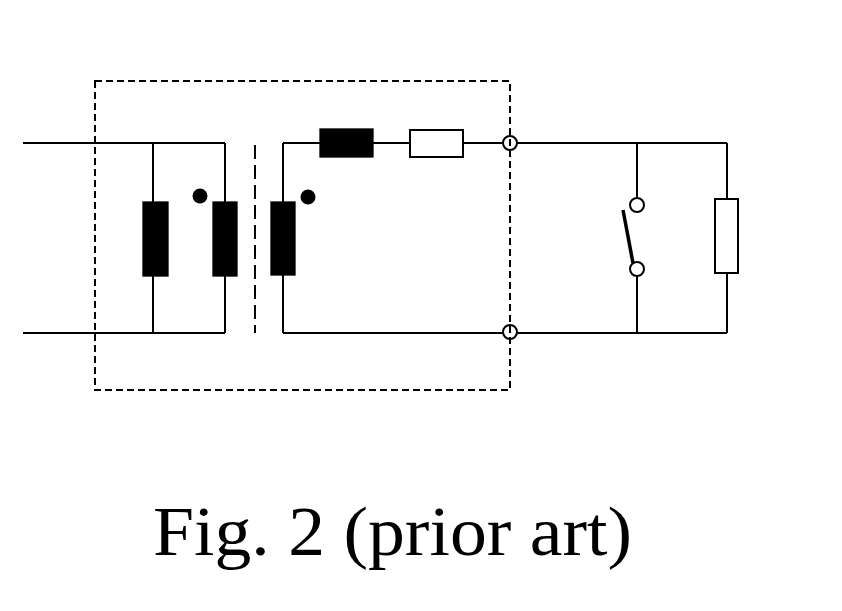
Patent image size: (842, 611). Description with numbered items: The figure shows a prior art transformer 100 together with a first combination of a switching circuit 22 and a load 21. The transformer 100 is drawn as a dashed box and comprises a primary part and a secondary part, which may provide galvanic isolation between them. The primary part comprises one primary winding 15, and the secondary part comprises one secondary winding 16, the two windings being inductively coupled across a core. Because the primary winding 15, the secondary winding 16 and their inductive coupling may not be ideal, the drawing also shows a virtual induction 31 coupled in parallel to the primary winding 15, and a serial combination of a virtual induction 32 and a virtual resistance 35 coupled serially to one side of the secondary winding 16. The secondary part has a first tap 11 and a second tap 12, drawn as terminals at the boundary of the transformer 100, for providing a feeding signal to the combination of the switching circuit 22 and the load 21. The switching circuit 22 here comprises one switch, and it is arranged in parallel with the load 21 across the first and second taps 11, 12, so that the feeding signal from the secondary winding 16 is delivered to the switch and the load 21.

The transformer 100 is at (469, 390).
The virtual induction 31 is at (139, 239).
The primary winding 15 is at (214, 252).
The secondary winding 16 is at (299, 235).
The virtual induction 32 is at (346, 126).
The virtual resistance 35 is at (436, 126).
The second tap 12 is at (516, 138).
The first tap 11 is at (516, 338).
The switching circuit 22 is at (633, 240).
The load 21 is at (738, 235).